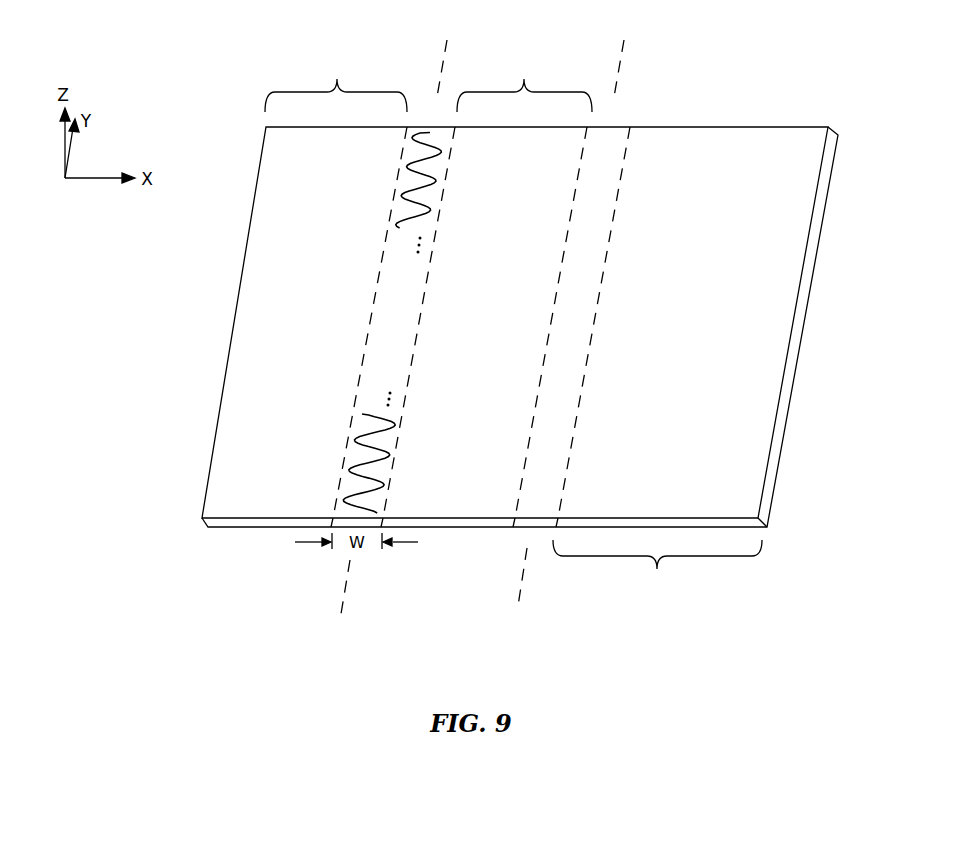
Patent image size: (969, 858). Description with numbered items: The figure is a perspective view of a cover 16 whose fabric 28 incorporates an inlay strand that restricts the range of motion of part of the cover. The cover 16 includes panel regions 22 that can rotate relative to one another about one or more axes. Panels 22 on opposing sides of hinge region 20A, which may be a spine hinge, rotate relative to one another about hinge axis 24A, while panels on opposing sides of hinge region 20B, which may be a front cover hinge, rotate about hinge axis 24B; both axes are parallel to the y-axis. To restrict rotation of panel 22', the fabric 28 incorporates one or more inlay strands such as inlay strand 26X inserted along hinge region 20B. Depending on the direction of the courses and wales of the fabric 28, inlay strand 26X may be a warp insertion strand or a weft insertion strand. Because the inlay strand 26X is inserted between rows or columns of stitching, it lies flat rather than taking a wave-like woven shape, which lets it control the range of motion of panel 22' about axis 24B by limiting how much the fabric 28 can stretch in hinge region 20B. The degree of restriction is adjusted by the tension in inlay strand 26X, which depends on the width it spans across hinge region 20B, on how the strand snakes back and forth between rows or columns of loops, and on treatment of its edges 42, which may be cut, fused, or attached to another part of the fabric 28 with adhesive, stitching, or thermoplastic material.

The cover 16 is at (724, 53).
The hinge region 20A is at (558, 340).
The hinge region 20B is at (397, 278).
The panel regions 22 is at (609, 327).
The panel 22' is at (336, 82).
The hinge axis 24A is at (523, 577).
The hinge axis 24B is at (347, 591).
The inlay strand 26X is at (356, 460).
The fabric 28 is at (225, 497).
The edges 42 is at (395, 454).